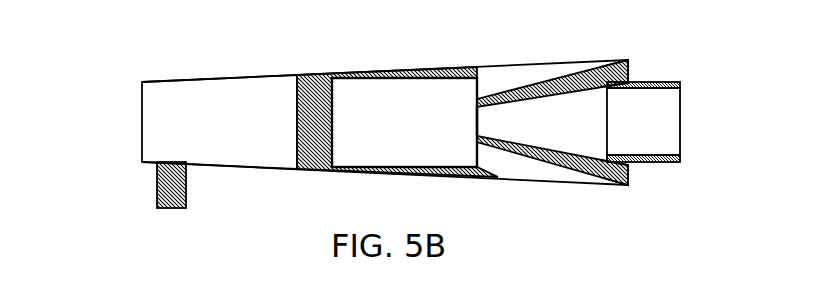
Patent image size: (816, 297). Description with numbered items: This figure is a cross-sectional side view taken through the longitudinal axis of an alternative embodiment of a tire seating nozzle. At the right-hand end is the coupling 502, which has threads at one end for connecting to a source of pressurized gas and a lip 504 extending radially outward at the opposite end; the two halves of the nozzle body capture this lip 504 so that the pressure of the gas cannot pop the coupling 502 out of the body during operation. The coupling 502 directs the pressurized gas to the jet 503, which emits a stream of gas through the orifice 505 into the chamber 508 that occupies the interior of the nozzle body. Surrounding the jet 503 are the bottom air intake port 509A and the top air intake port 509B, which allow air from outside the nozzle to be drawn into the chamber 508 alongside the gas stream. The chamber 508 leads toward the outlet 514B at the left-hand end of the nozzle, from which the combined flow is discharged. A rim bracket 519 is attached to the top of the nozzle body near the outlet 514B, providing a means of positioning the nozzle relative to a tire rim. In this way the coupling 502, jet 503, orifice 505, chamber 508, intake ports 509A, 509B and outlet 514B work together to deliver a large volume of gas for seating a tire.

The outlet 514B is at (140, 110).
The rim bracket 519 is at (157, 200).
The chamber 508 is at (421, 140).
The orifice 505 is at (482, 118).
The bottom air intake port 509A is at (552, 61).
The top air intake port 509B is at (535, 179).
The jet 503 is at (566, 122).
The lip 504 is at (627, 182).
The coupling 502 is at (654, 162).